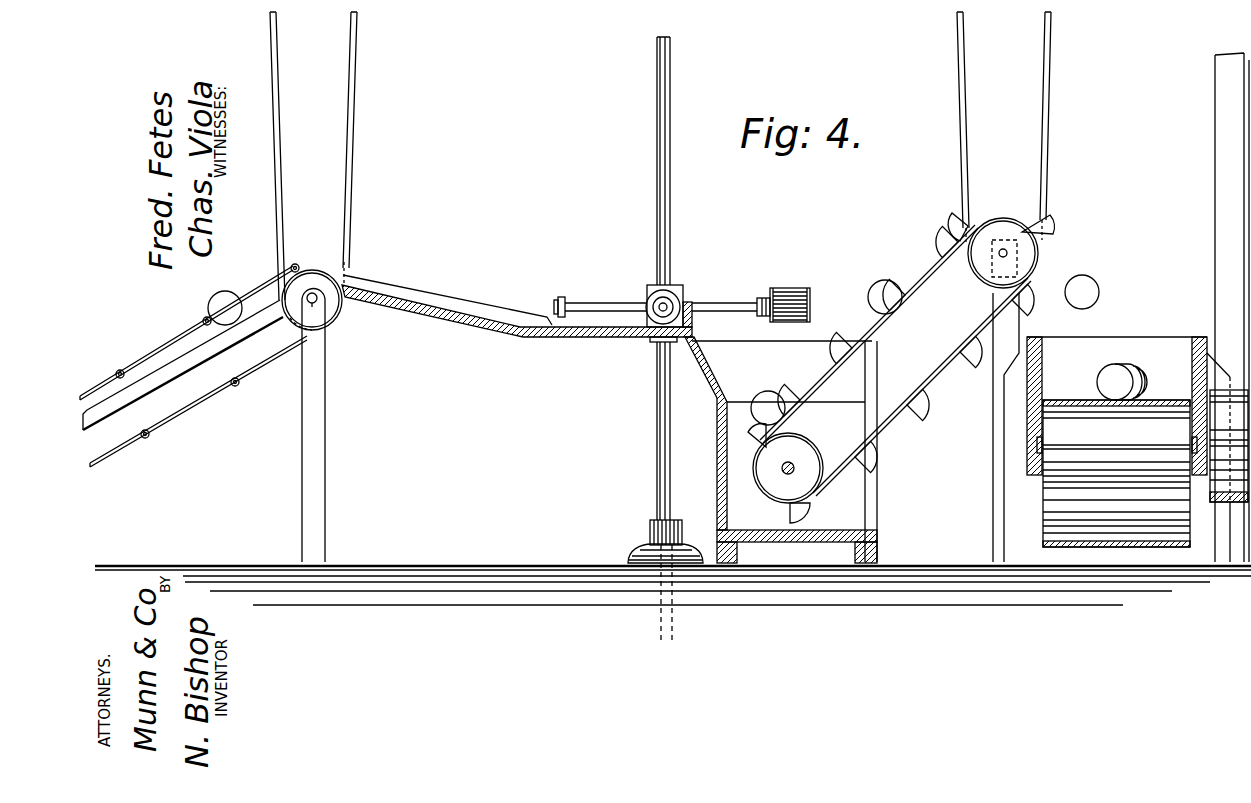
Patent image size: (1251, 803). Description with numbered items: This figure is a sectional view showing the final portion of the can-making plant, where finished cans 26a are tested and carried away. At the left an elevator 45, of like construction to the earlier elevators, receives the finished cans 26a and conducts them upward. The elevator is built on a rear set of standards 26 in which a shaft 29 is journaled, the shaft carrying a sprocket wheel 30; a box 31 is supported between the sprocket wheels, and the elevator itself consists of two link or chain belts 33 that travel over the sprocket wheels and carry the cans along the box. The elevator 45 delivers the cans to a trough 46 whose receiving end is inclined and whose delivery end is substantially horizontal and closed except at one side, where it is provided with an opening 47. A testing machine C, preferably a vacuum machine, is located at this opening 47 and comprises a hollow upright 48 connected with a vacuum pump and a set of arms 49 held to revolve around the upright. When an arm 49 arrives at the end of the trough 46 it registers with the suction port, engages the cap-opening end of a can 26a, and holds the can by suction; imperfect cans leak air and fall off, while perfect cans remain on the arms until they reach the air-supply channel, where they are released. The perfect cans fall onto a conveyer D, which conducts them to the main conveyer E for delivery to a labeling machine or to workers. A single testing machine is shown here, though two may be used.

The rear standards 26 is at (313, 425).
The articles (cans) 26a is at (227, 291).
The shaft 29 is at (314, 309).
The sprocket wheel 30 is at (312, 300).
The box 31 is at (163, 378).
The link or chain belts 33 is at (193, 366).
The elevator 45 is at (198, 401).
The trough 46 is at (447, 300).
The opening 47 is at (578, 338).
The upright 48 is at (780, 450).
The arms 49 is at (618, 303).
The testing machine C is at (665, 338).
The conveyer D is at (901, 267).
The main conveyer E is at (1120, 427).